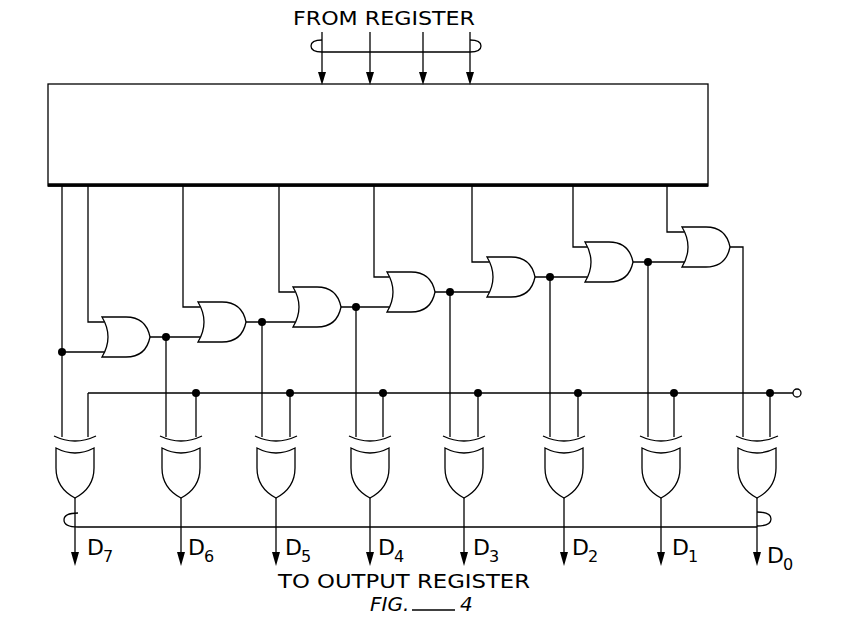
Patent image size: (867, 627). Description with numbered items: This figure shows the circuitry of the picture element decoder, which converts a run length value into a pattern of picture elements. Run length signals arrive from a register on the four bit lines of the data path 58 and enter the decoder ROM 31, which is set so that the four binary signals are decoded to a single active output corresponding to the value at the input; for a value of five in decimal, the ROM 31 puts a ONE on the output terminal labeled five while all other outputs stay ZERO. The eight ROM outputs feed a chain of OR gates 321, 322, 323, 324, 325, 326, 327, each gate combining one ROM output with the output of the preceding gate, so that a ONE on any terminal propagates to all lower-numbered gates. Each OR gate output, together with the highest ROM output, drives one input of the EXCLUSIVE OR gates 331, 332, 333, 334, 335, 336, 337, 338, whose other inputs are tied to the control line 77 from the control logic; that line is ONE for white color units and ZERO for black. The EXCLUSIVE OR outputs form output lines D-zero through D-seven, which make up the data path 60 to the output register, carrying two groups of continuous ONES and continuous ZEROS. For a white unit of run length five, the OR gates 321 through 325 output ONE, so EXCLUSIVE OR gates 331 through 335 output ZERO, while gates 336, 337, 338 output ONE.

The decoder ROM 31 is at (662, 84).
The data path 58 is at (481, 46).
The data path 60 is at (771, 521).
The control line 77 is at (793, 391).
The OR gate 321 is at (706, 227).
The OR gate 322 is at (594, 242).
The OR gate 323 is at (528, 246).
The OR gate 324 is at (422, 259).
The OR gate 325 is at (318, 287).
The OR gate 326 is at (222, 302).
The OR gate 327 is at (118, 317).
The EXCLUSIVE OR gate 331 is at (768, 492).
The EXCLUSIVE OR gate 332 is at (672, 492).
The EXCLUSIVE OR gate 333 is at (575, 492).
The EXCLUSIVE OR gate 334 is at (475, 492).
The EXCLUSIVE OR gate 335 is at (381, 492).
The EXCLUSIVE OR gate 336 is at (287, 492).
The EXCLUSIVE OR gate 337 is at (192, 492).
The EXCLUSIVE OR gate 338 is at (86, 492).